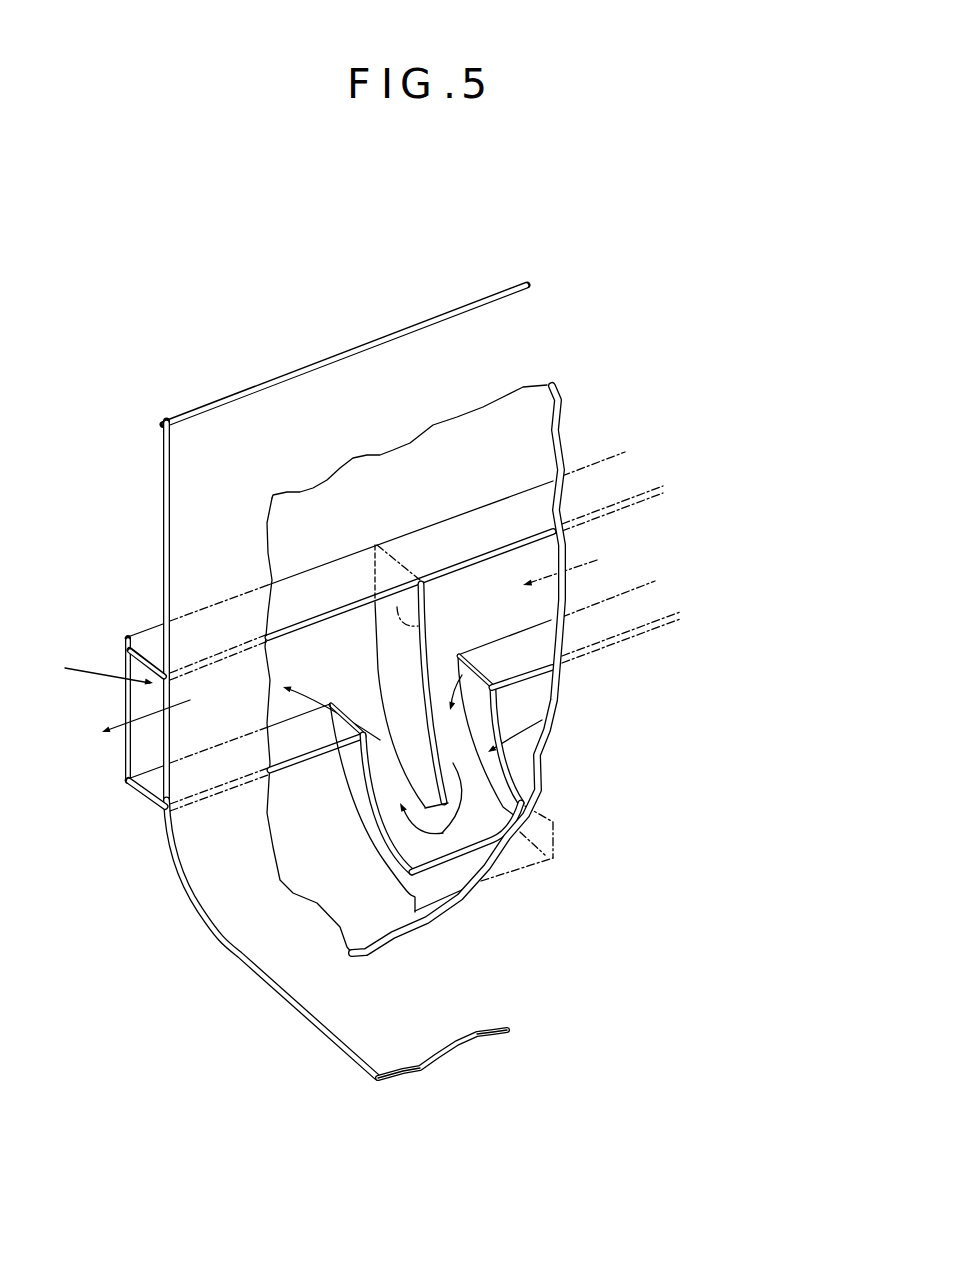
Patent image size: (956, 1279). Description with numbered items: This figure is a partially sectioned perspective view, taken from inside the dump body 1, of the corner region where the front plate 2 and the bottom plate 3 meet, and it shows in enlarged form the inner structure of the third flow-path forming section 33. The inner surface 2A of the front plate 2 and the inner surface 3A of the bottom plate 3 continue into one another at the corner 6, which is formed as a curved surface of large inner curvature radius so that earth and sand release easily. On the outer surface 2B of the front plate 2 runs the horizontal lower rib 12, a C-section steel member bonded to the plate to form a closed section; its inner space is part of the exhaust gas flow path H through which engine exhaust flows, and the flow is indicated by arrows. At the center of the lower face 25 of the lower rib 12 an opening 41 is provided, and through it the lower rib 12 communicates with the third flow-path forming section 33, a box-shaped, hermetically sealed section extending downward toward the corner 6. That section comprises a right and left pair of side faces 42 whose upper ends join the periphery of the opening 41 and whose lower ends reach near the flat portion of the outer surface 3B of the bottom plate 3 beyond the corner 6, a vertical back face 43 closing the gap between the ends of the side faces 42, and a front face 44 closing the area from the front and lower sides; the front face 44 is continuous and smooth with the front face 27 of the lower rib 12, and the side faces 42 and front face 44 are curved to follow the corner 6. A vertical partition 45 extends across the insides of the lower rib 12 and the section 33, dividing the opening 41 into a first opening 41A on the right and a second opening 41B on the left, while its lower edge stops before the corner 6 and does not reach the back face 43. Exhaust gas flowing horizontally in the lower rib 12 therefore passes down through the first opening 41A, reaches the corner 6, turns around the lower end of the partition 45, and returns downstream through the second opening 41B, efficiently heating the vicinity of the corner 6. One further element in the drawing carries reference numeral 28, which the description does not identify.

The body 1 is at (396, 265).
The front plate 2 is at (291, 372).
The inner surface of the front plate 2A is at (355, 372).
The outer surface of the front plate 2B is at (162, 470).
The bottom plate 3 is at (427, 1046).
The inner surface of the bottom plate 3A is at (483, 1023).
The outer surface of the bottom plate 3B is at (408, 1078).
The corner 6 is at (216, 905).
The lower rib 12 is at (152, 630).
The lower face of the lower rib 25 is at (135, 782).
The front face of the lower rib 27 is at (335, 660).
The top wall 28 is at (335, 572).
The third flow-path forming section 33 is at (546, 728).
The opening 41 is at (439, 720).
The first opening 41A is at (508, 652).
The second opening 41B is at (336, 706).
The side faces 42 is at (360, 830).
The back face 43 is at (456, 871).
The front face 44 is at (551, 821).
The partition 45 is at (424, 627).
The exhaust gas flow path H is at (117, 692).